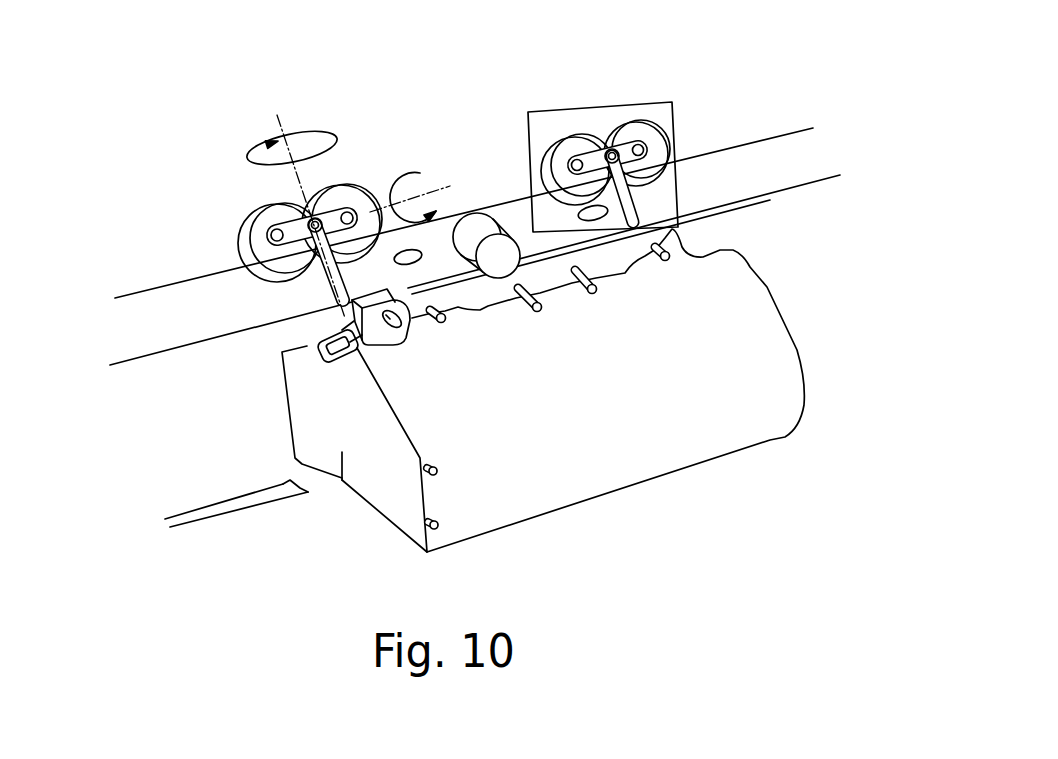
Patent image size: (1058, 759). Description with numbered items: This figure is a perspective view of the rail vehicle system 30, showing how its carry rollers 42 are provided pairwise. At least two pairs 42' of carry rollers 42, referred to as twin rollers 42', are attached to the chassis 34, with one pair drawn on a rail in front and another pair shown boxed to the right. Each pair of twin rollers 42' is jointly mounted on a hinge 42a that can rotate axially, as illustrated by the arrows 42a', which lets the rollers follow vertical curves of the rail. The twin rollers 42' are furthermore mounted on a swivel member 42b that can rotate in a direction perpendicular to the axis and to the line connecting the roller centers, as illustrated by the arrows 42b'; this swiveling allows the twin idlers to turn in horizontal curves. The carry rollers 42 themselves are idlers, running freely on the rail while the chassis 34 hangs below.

The cable guide assembly 30 is at (352, 535).
The chassis 34 is at (638, 452).
The carry rollers 42 is at (566, 116).
The hinge 42a is at (594, 82).
The swivel member 42b is at (638, 107).
The twin rollers 42' is at (568, 116).
The arrows 42a' is at (395, 140).
The arrows 42b' is at (294, 179).